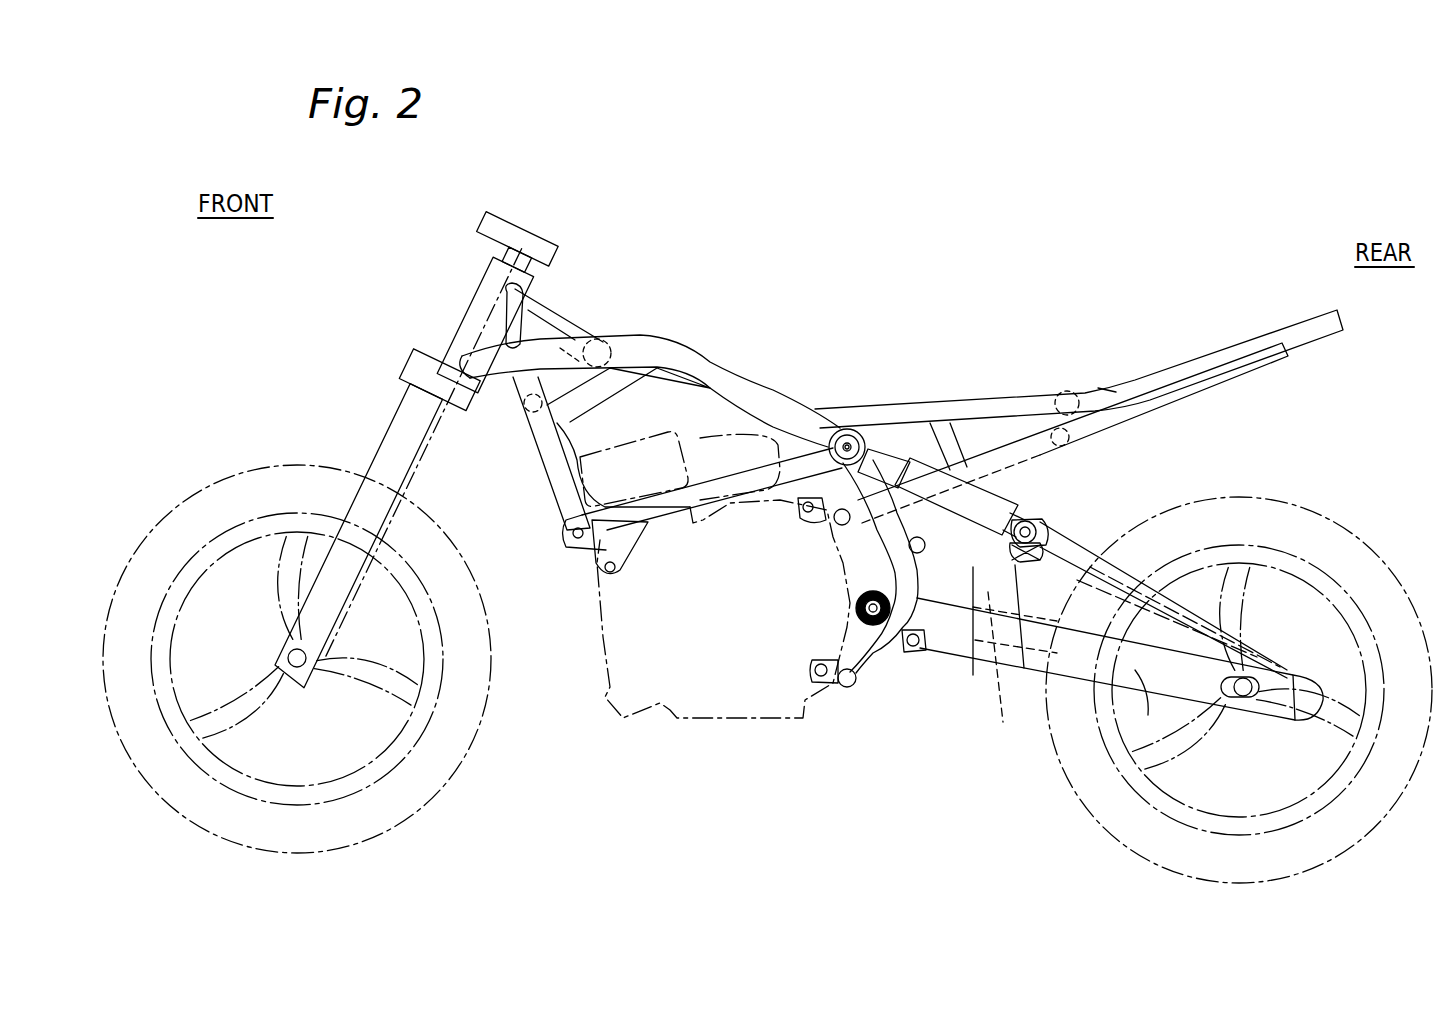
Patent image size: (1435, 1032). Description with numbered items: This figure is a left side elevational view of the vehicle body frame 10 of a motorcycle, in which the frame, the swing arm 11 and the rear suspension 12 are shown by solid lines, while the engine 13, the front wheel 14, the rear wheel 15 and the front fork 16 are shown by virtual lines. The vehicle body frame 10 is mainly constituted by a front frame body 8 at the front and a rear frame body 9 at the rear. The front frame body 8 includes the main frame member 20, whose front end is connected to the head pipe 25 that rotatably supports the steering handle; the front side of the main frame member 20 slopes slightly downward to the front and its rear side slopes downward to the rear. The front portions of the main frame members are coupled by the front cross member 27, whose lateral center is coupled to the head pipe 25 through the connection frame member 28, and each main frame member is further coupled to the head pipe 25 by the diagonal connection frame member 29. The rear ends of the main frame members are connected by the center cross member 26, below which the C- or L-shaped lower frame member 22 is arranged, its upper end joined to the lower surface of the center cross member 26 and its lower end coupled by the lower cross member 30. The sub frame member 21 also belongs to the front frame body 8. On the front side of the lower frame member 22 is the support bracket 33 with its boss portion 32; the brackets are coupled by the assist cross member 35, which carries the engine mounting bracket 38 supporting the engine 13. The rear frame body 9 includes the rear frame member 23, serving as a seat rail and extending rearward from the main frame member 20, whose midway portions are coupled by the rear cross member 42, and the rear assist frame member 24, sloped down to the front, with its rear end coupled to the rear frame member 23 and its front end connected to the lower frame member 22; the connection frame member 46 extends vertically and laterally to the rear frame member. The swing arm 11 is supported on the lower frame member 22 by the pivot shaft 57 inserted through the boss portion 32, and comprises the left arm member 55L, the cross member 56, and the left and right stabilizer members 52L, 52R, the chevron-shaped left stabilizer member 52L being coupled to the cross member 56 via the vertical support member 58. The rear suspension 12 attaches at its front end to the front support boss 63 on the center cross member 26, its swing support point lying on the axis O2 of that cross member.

The vehicle body frame 10 is at (893, 213).
The front frame body 8 is at (782, 303).
The rear frame body 9 is at (924, 328).
The front wheel 14 is at (443, 788).
The front fork 16 is at (340, 478).
The head pipe 25 is at (480, 278).
The connection frame member 29 is at (512, 337).
The main frame member 20 is at (686, 338).
The connection frame member 28 is at (563, 310).
The front cross member 27 is at (615, 338).
The sub frame member 21 is at (667, 520).
The center cross member 26 is at (829, 428).
The axis of the center cross member O2 is at (851, 440).
The lower frame member 22 is at (893, 660).
The lower cross member 30 is at (832, 690).
The pivot shaft 57 is at (856, 613).
The assist cross member 35 is at (838, 526).
The engine mounting bracket 38 is at (803, 510).
The support bracket 33 is at (847, 563).
The boss portion 32 is at (860, 643).
The engine 13 is at (717, 720).
The rear frame member 23 is at (1223, 352).
The rear assist frame member 24 is at (1227, 410).
The connection frame member 46 is at (965, 425).
The rear cross member 42 is at (1090, 393).
The rear suspension 12 is at (1016, 498).
The front support boss 63 is at (1043, 524).
The swing arm 11 is at (1029, 668).
The left stabilizer member 52L is at (1185, 598).
The right stabilizer member 52R is at (1185, 695).
The support member 58 is at (971, 625).
The cross member 56 is at (1010, 680).
The left arm member 55L is at (1143, 680).
The rear wheel 15 is at (1115, 840).